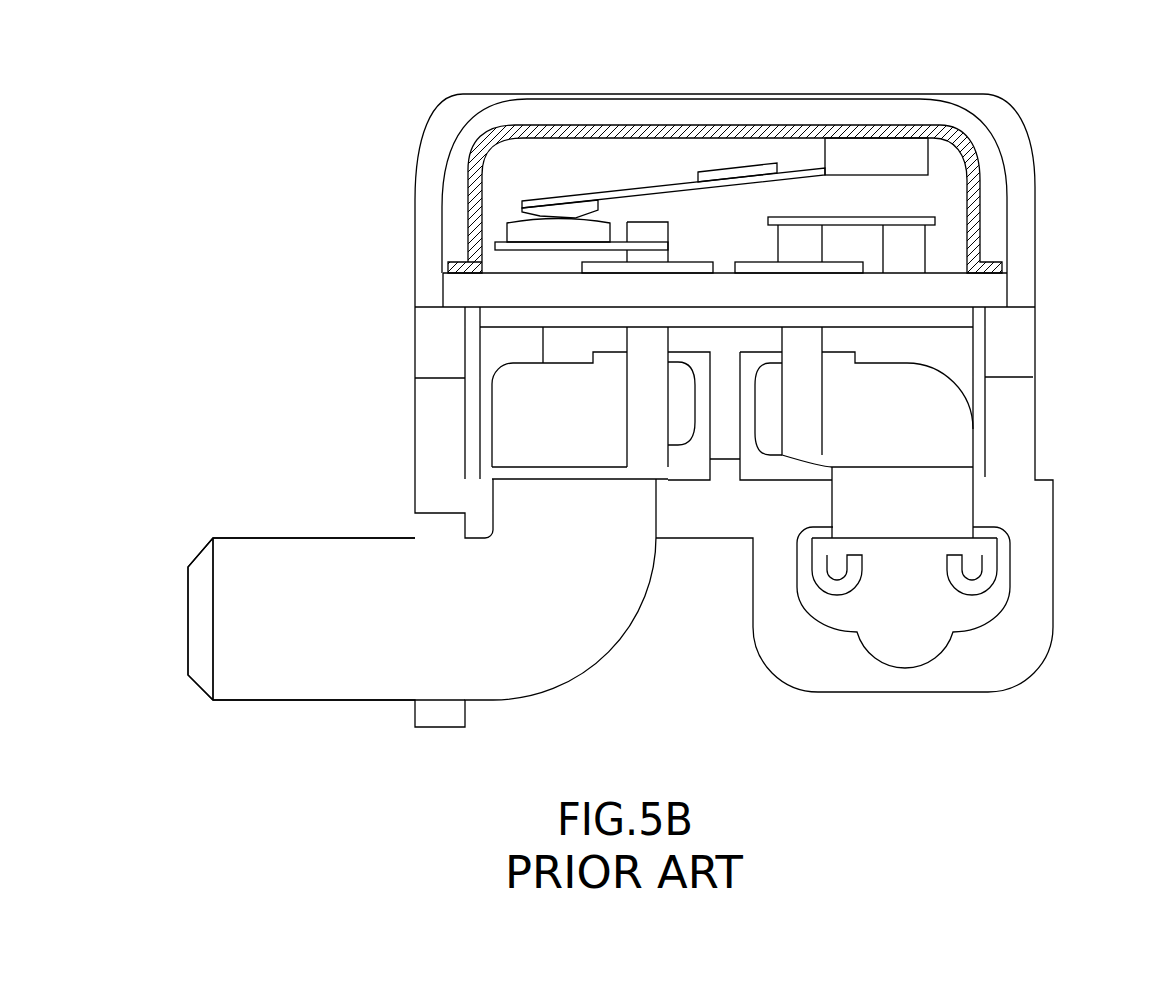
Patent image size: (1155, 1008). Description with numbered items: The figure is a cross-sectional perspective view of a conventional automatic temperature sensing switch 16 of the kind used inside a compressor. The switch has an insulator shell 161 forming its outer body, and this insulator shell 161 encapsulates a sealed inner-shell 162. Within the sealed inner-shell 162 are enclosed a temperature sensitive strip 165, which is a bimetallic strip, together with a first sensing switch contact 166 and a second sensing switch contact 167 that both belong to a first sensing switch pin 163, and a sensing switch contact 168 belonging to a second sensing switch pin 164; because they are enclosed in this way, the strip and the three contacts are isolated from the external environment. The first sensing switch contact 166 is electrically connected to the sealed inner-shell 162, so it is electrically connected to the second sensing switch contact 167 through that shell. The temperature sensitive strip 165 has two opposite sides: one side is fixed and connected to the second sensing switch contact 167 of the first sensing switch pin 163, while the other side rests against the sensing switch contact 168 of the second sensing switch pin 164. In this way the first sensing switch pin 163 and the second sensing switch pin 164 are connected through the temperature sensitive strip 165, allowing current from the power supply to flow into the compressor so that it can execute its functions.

The conventional automatic temperature sensing switch 16 is at (1006, 92).
The insulator shell 161 is at (1018, 155).
The sealed inner-shell 162 is at (878, 130).
The first sensing switch pin 163 is at (970, 600).
The second sensing switch pin 164 is at (390, 668).
The temperature sensitive strip 165 is at (623, 182).
The first sensing switch contact 166 is at (920, 216).
The second sensing switch contact 167 is at (785, 172).
The sensing switch contact 168 is at (527, 233).